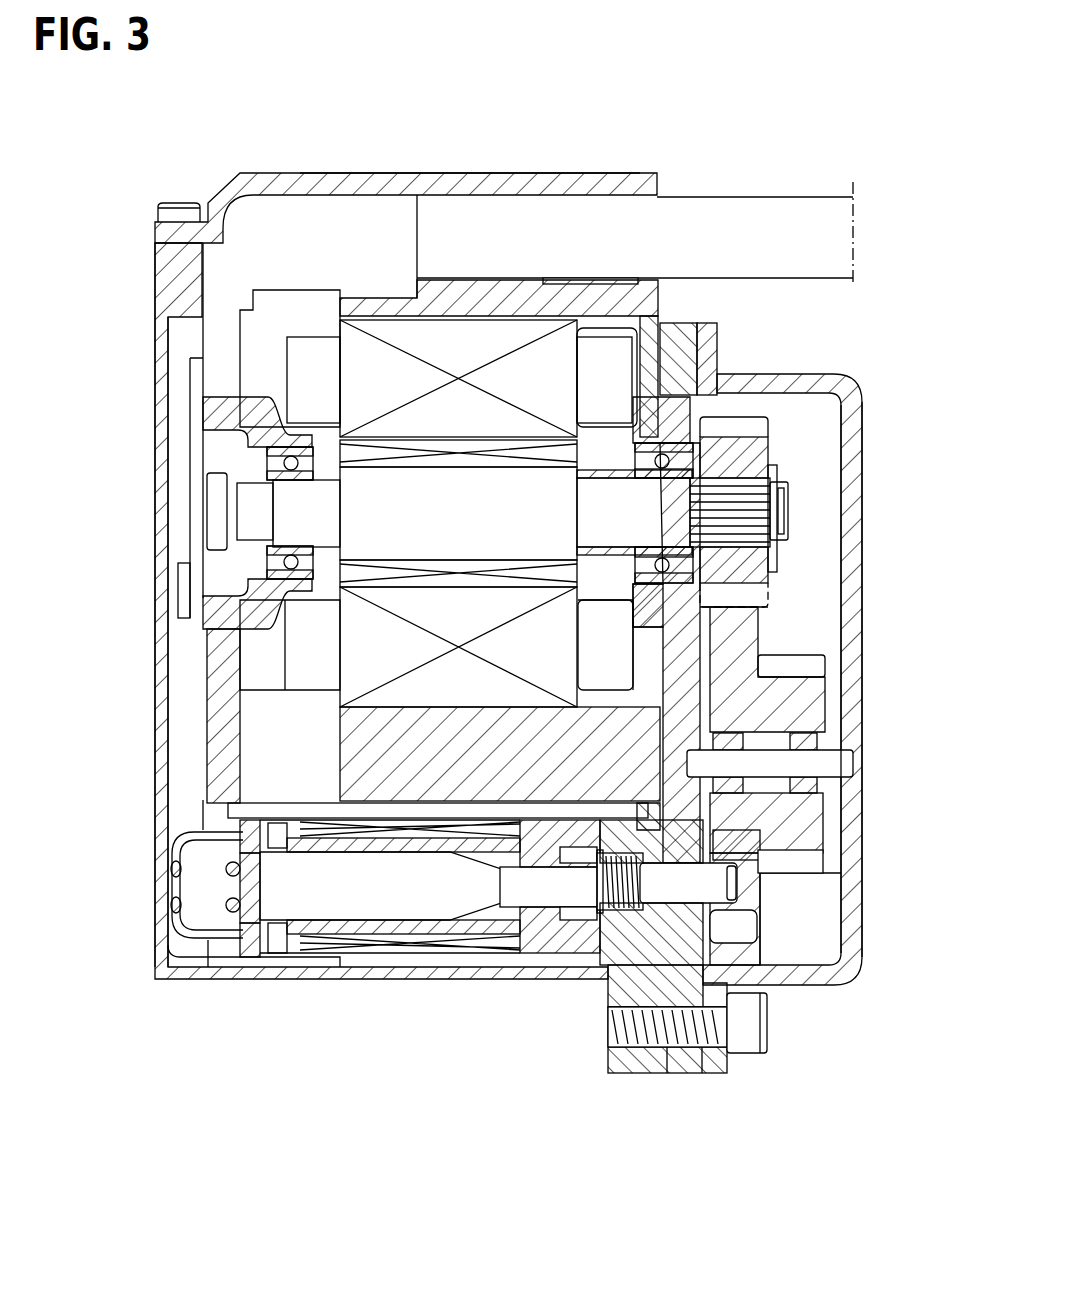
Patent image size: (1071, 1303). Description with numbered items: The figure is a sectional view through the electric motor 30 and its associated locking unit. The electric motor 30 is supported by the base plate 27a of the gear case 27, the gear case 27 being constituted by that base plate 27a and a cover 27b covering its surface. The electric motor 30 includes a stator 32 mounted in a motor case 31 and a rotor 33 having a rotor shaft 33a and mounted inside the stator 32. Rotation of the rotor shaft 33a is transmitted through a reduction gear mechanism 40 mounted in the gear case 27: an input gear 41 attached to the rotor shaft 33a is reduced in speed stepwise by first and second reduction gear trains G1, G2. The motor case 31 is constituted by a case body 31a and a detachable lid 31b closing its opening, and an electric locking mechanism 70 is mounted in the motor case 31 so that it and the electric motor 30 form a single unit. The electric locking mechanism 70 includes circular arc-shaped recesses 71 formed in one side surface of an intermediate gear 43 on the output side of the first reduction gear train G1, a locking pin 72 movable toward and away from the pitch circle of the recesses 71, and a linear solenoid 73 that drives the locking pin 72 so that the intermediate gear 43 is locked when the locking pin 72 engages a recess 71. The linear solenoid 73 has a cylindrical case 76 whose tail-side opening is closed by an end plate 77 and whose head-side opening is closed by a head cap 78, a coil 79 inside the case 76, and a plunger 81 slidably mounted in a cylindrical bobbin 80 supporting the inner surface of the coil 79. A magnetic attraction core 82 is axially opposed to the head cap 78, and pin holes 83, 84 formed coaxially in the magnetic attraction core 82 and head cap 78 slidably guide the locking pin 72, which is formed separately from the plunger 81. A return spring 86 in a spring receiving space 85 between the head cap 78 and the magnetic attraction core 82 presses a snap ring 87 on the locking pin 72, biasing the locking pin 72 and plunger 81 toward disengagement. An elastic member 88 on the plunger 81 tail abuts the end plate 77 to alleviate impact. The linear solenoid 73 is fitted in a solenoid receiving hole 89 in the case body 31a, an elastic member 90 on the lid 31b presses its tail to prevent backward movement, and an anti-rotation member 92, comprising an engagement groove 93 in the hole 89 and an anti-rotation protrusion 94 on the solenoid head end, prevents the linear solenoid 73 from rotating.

The electric motor 30 is at (242, 170).
The motor case 31 is at (303, 172).
The case body 31a is at (362, 176).
The lid 31b is at (160, 268).
The stator 32 is at (458, 330).
The rotor 33 is at (430, 531).
The rotor shaft 33a is at (662, 531).
The gear case 27 is at (845, 378).
The base plate 27a is at (690, 352).
The cover 27b is at (852, 418).
The input gear 41 is at (758, 450).
The reduction gear mechanism 40 is at (772, 578).
The first reduction gear train G1 is at (770, 605).
The second reduction gear train G2 is at (830, 872).
The intermediate gear 43 is at (765, 905).
The anti-rotation protrusion 94 is at (643, 798).
The anti-rotation member 92 is at (650, 803).
The engagement groove 93 is at (365, 808).
The elastic member 90 is at (178, 868).
The elastic member 88 is at (232, 905).
The end plate 77 is at (190, 935).
The cylindrical case 76 is at (262, 970).
The linear solenoid 73 is at (298, 960).
The solenoid receiving hole 89 is at (325, 960).
The coil 79 is at (390, 935).
The cylindrical bobbin 80 is at (408, 935).
The plunger 81 is at (440, 905).
The electric locking mechanism 70 is at (480, 965).
The magnetic attraction core 82 is at (530, 934).
The pin hole 83 is at (545, 910).
The snap ring 87 is at (580, 918).
The return spring 86 is at (630, 1047).
The spring receiving space 85 is at (648, 1047).
The head cap 78 is at (696, 1052).
The pin hole 84 is at (716, 1050).
The circular arc-shaped recess 71 is at (735, 885).
The locking pin 72 is at (730, 905).